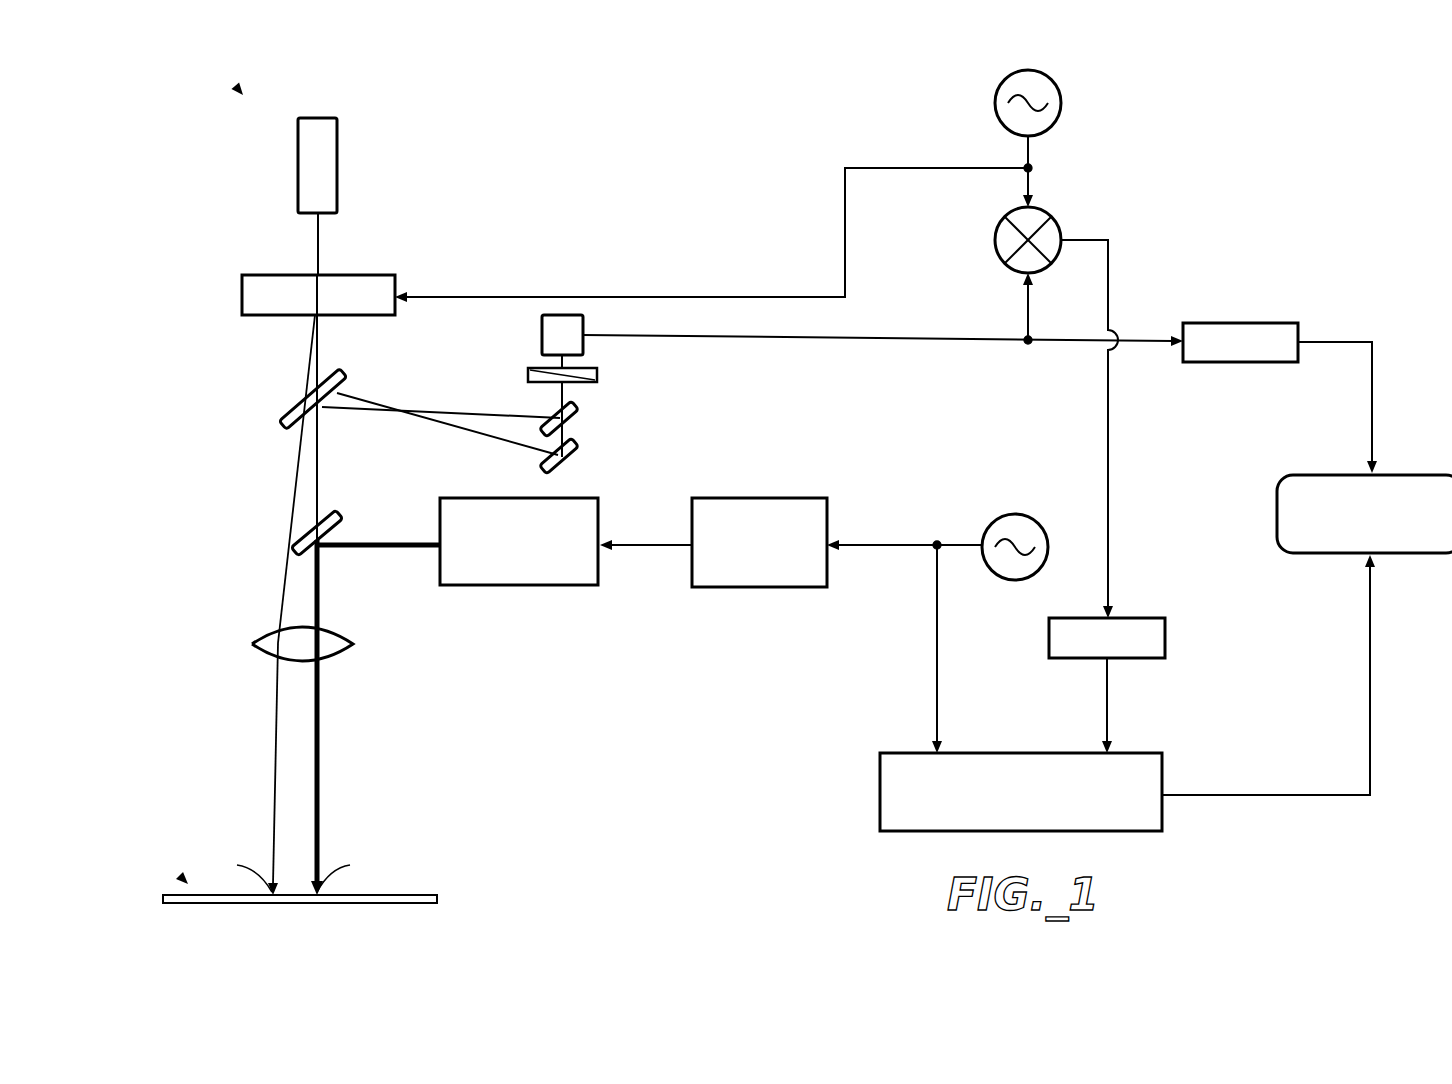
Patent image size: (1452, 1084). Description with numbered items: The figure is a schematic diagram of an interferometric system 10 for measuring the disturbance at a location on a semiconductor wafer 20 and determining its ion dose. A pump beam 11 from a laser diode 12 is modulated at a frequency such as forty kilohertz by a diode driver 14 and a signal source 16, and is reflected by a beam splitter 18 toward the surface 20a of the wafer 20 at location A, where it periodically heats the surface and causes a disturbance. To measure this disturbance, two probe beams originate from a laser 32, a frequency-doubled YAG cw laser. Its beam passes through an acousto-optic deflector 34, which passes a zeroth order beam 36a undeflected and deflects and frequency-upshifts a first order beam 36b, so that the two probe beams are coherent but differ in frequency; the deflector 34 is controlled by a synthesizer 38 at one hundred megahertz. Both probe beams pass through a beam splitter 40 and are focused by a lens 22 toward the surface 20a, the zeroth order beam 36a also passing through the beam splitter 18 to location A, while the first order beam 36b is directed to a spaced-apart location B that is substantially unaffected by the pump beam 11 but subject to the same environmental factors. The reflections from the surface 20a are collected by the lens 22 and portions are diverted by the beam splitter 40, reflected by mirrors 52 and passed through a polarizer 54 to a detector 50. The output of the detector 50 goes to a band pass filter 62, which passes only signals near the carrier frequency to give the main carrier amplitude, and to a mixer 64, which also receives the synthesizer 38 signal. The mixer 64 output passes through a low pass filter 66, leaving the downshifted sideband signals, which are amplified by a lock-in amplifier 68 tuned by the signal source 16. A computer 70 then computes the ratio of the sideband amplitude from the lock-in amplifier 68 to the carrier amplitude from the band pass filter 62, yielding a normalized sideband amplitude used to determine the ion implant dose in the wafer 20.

The interferometric system 10 is at (238, 90).
The laser 32 is at (298, 167).
The acousto-optic deflector 34 is at (295, 274).
The zeroth order beam 36a is at (318, 355).
The first order beam 36b is at (306, 363).
The beam splitter 40 is at (293, 412).
The beam splitter 18 is at (340, 528).
The laser diode 12 is at (527, 497).
The pump beam 11 is at (345, 542).
The lens 22 is at (267, 633).
The semiconductor wafer 20 is at (183, 878).
The surface 20a is at (402, 895).
The detector 50 is at (538, 343).
The polarizer 54 is at (597, 378).
The mirrors 52 is at (575, 447).
The diode driver 14 is at (767, 498).
The signal source 16 is at (1020, 582).
The synthesizer 38 is at (997, 100).
The mixer 64 is at (1052, 222).
The band pass filter 62 is at (1242, 323).
The computer 70 is at (1327, 475).
The low pass filter 66 is at (1140, 617).
The lock-in amplifier 68 is at (902, 752).